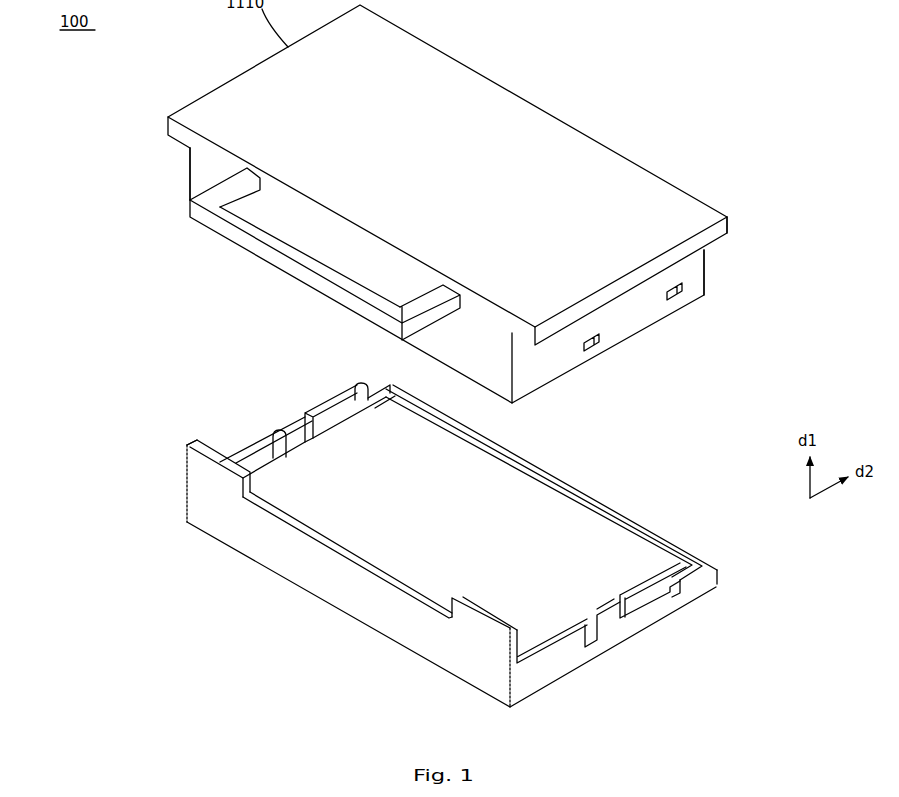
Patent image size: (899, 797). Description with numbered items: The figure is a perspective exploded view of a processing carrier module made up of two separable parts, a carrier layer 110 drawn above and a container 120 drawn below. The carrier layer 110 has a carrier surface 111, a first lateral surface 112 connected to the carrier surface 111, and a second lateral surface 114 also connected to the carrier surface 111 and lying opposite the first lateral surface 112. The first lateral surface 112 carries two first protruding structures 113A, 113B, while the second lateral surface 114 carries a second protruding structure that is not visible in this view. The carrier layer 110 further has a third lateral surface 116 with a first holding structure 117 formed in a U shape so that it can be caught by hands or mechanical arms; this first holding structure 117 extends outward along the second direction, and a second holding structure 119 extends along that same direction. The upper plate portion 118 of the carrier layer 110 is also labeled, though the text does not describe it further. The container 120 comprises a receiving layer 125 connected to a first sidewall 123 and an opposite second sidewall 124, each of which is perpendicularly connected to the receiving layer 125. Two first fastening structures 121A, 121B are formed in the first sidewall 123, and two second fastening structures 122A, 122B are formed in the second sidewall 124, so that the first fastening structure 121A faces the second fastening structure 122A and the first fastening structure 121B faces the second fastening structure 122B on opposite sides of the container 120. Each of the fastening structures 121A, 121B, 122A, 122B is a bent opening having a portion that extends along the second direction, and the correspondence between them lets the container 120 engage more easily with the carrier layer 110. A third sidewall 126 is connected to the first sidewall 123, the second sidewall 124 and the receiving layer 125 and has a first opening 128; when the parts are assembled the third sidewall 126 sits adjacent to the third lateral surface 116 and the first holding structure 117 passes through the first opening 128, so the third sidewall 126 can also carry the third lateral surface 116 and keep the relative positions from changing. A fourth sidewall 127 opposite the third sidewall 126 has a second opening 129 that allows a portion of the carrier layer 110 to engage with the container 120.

The carrier layer 110 is at (405, 204).
The carrier surface 111 is at (650, 338).
The first lateral surface 112 is at (705, 265).
The first protruding structure 113A is at (596, 349).
The first protruding structure 113B is at (680, 298).
The second lateral surface 114 is at (186, 166).
The third lateral surface 116 is at (186, 187).
The first holding structure 117 is at (230, 217).
The top plate 118 is at (563, 119).
The second holding structure 119 is at (733, 218).
The container 120 is at (417, 522).
The first fastening structure 121A is at (603, 635).
The first fastening structure 121B is at (684, 593).
The second fastening structure 122A is at (283, 431).
The second fastening structure 122B is at (362, 386).
The first sidewall 123 is at (537, 665).
The second sidewall 124 is at (228, 462).
The receiving layer 125 is at (607, 540).
The third sidewall 126 is at (262, 545).
The fourth sidewall 127 is at (556, 473).
The first opening 128 is at (342, 541).
The second opening 129 is at (688, 538).